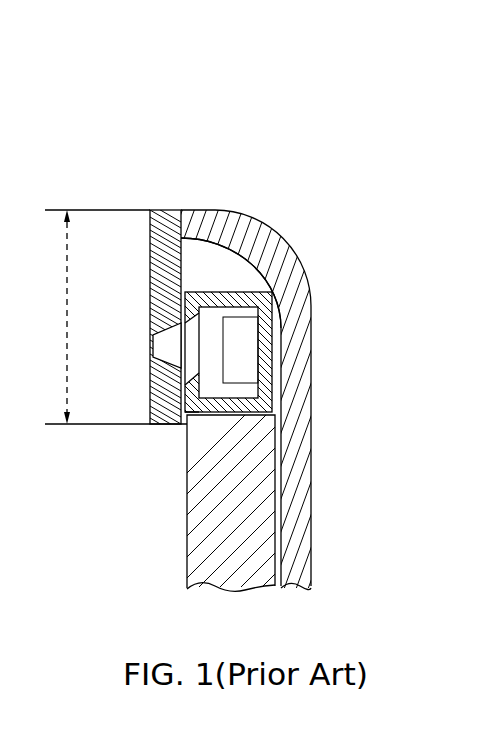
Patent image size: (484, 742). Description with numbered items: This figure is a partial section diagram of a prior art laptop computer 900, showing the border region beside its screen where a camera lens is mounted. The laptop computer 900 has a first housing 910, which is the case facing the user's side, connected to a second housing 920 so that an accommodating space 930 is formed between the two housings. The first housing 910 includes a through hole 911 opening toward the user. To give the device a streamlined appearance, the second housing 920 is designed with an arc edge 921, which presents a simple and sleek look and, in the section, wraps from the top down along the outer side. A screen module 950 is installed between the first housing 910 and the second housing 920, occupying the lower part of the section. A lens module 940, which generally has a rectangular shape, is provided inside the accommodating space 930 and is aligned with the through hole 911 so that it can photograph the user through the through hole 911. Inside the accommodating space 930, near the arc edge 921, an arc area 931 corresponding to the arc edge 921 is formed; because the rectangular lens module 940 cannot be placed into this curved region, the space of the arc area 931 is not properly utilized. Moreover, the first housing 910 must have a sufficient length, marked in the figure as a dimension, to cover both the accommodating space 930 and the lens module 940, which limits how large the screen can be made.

The laptop computer 900 is at (148, 188).
The first housing 910 is at (158, 258).
The through hole 911 is at (154, 348).
The second housing 920 is at (305, 475).
The arc edge 921 is at (277, 240).
The accommodating space 930 is at (290, 383).
The arc area 931 is at (215, 262).
The lens module 940 is at (185, 405).
The screen module 950 is at (192, 554).